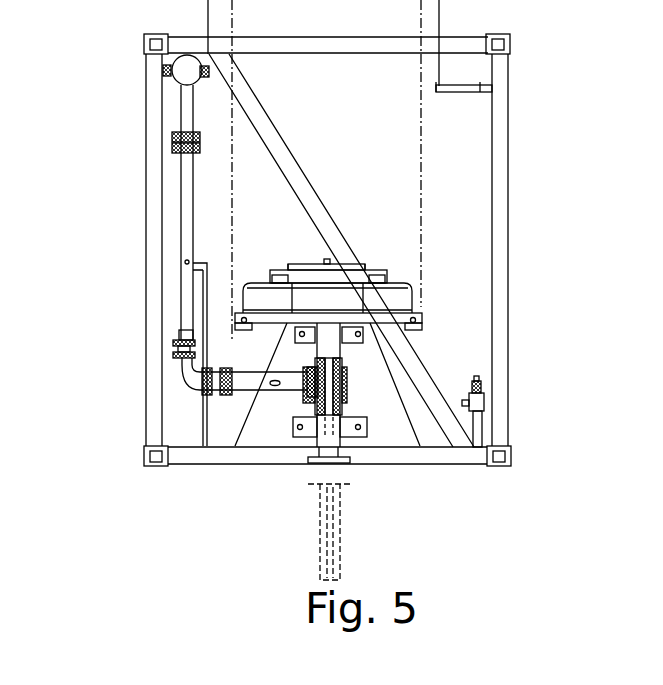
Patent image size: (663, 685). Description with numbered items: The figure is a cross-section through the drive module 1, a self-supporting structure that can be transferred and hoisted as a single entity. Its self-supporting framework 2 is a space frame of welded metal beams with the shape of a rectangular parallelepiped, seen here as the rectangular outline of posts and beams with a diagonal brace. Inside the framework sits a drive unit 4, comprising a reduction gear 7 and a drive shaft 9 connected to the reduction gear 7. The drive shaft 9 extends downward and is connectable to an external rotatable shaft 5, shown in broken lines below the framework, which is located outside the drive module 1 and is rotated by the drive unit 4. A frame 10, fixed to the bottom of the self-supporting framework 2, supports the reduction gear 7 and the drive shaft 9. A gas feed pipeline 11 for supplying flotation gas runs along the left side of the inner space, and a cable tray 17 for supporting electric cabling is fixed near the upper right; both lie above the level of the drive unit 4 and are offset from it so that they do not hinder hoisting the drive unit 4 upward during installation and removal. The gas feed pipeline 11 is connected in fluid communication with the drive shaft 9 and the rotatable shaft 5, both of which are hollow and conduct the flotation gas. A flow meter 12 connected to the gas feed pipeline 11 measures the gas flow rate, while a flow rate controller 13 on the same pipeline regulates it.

The drive module 1 is at (95, 50).
The self-supporting framework 2 is at (508, 190).
The drive unit 4 is at (381, 278).
The external rotatable shaft 5 is at (342, 518).
The reduction gear 7 is at (302, 280).
The drive shaft 9 is at (347, 383).
The frame 10 is at (280, 413).
The gas feed pipeline 11 is at (182, 200).
The flow meter 12 is at (173, 352).
The flow rate controller 13 is at (200, 147).
The cable tray 17 is at (480, 88).